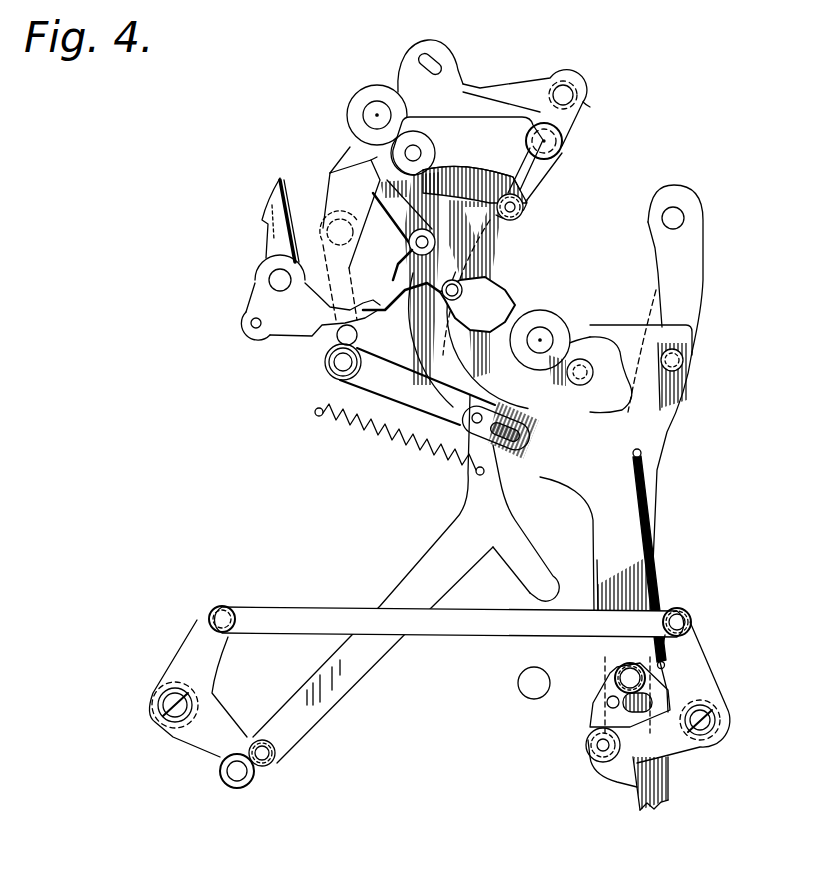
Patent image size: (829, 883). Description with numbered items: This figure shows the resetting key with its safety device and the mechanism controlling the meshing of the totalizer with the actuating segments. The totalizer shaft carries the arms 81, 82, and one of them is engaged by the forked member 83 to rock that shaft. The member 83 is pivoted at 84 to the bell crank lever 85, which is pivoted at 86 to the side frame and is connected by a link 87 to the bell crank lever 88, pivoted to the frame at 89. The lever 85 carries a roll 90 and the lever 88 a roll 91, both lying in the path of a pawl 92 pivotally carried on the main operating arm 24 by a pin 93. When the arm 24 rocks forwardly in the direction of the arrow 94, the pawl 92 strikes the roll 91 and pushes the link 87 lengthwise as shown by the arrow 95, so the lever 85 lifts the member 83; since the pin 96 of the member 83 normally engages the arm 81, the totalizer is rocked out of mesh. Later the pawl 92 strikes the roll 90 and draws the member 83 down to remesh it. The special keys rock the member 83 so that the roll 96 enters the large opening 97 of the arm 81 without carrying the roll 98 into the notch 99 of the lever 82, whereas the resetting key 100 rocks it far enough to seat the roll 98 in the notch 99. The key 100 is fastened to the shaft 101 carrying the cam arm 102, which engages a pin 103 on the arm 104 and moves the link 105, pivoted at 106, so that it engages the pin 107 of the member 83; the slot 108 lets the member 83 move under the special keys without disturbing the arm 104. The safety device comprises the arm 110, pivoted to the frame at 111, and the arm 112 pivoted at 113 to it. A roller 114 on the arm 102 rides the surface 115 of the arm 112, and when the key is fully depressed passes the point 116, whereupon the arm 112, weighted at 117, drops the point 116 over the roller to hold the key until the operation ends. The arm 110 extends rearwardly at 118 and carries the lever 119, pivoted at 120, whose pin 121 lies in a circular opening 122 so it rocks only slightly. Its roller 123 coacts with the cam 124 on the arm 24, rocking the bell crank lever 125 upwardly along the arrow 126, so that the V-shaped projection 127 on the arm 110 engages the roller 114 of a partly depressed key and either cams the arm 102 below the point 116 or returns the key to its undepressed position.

The main operating arm 24 is at (623, 550).
The arm 81 is at (503, 274).
The arm 82 is at (623, 340).
The forked member 83 is at (483, 507).
The pivot 84 is at (230, 770).
The bell crank lever 85 is at (200, 642).
The pivot 86 is at (160, 705).
The link 87 is at (293, 620).
The bell crank lever 88 is at (688, 666).
The pivot 89 is at (722, 722).
The roll 90 is at (277, 752).
The roll 91 is at (590, 748).
The pawl 92 is at (602, 705).
The pin 93 is at (626, 666).
The arrow 94 is at (601, 836).
The arrow 95 is at (412, 667).
The pin 96 is at (468, 293).
The large opening 97 is at (455, 335).
The roll 98 is at (594, 413).
The notch 99 is at (680, 397).
The resetting key 100 is at (265, 256).
The shaft 101 is at (277, 283).
The cam arm 102 is at (300, 316).
The pin 103 is at (338, 350).
The arm 104 is at (356, 328).
The link 105 is at (400, 388).
The pivot 106 is at (335, 380).
The pin 107 is at (475, 422).
The slot 108 is at (525, 434).
The arm 110 is at (362, 150).
The pivot 111 is at (377, 115).
The arm 112 is at (350, 180).
The pivot 113 is at (443, 185).
The roller 114 is at (525, 210).
The surface 115 is at (530, 322).
The point 116 is at (566, 374).
The weight 117 is at (337, 220).
The arm 118 is at (508, 88).
The lever 119 is at (528, 183).
The pivot 120 is at (564, 137).
The pin 121 is at (590, 90).
The circular opening 122 is at (585, 104).
The roller 123 is at (530, 208).
The cam 124 is at (481, 187).
The bell crank lever 125 is at (420, 73).
The arrow 126 is at (457, 14).
The V-shaped projection 127 is at (440, 246).